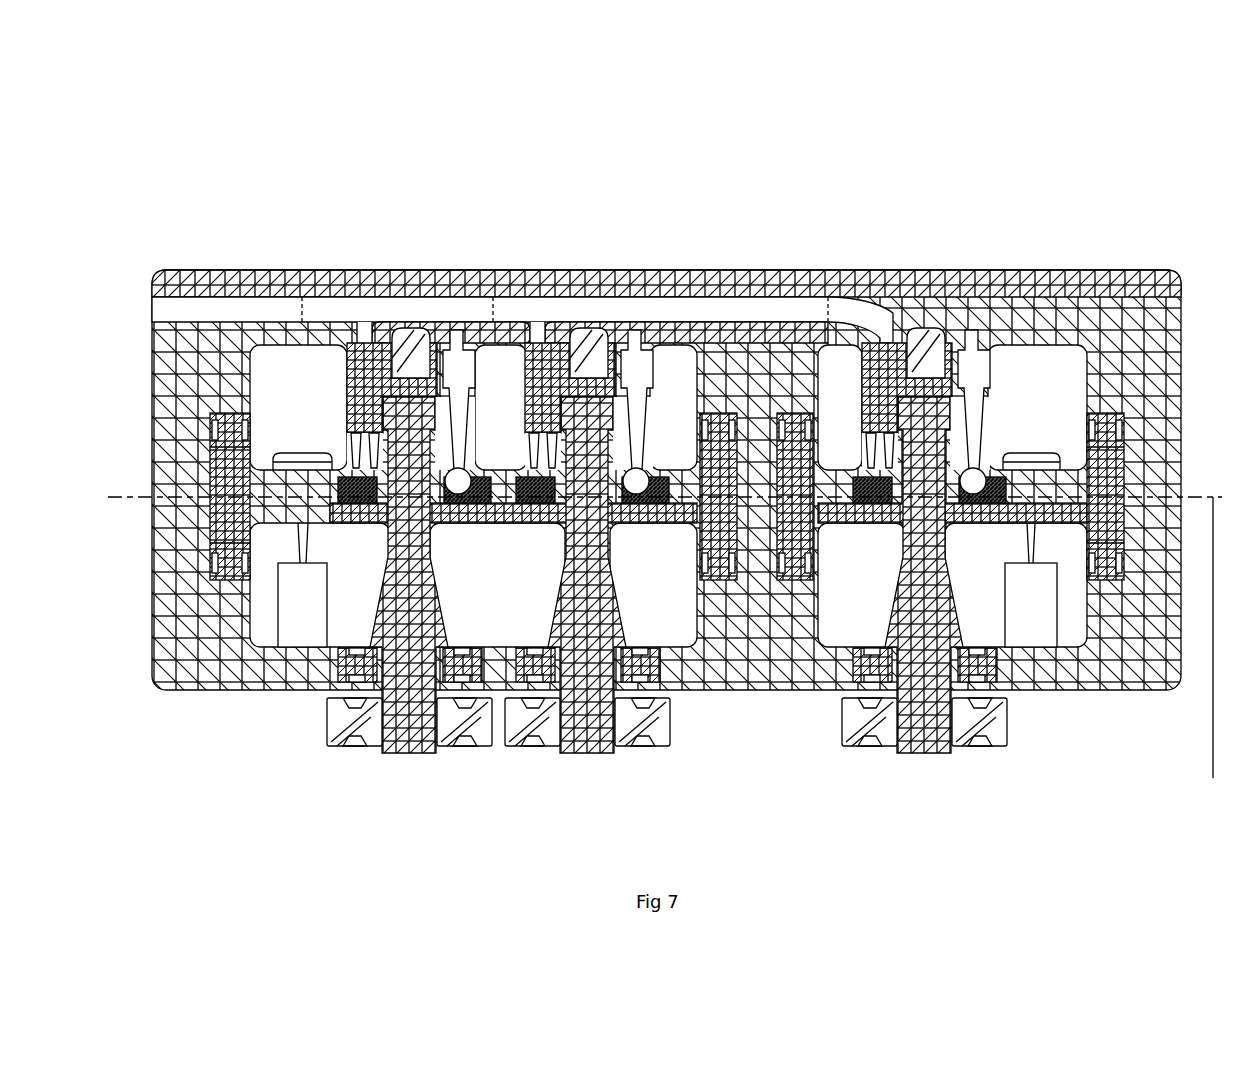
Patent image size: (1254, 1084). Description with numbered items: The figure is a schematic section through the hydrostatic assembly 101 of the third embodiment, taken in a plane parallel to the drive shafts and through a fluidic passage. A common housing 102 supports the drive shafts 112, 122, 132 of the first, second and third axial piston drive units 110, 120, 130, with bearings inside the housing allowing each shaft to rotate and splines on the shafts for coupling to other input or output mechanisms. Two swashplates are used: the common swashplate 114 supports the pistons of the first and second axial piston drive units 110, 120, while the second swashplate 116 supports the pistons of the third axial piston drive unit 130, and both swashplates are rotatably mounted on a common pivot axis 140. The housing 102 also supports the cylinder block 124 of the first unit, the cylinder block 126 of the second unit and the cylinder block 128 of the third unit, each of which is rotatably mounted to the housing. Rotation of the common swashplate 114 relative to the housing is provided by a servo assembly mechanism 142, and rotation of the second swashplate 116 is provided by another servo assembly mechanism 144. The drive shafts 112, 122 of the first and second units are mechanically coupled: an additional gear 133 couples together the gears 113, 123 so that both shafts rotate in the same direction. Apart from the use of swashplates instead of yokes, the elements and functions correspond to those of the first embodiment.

The hydrostatic assembly 101 is at (465, 183).
The common housing 102 is at (1157, 384).
The first axial piston drive unit 110 is at (694, 334).
The drive shaft 112 is at (604, 606).
The gear 113 is at (587, 782).
The common swashplate 114 is at (245, 483).
The second swashplate 116 is at (1100, 477).
The second axial piston drive unit 120 is at (529, 334).
The drive shaft 122 is at (433, 604).
The gear 123 is at (409, 782).
The cylinder block 124 is at (549, 395).
The cylinder block 126 is at (361, 392).
The cylinder block 128 is at (886, 392).
The third axial piston drive unit 130 is at (1029, 334).
The drive shaft 132 is at (942, 606).
The additional gear 133 is at (924, 782).
The common pivot axis 140 is at (665, 638).
The servo assembly mechanism 142 is at (303, 612).
The servo assembly mechanism 144 is at (1030, 608).